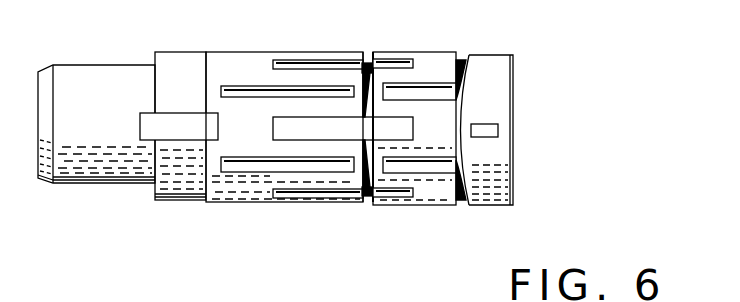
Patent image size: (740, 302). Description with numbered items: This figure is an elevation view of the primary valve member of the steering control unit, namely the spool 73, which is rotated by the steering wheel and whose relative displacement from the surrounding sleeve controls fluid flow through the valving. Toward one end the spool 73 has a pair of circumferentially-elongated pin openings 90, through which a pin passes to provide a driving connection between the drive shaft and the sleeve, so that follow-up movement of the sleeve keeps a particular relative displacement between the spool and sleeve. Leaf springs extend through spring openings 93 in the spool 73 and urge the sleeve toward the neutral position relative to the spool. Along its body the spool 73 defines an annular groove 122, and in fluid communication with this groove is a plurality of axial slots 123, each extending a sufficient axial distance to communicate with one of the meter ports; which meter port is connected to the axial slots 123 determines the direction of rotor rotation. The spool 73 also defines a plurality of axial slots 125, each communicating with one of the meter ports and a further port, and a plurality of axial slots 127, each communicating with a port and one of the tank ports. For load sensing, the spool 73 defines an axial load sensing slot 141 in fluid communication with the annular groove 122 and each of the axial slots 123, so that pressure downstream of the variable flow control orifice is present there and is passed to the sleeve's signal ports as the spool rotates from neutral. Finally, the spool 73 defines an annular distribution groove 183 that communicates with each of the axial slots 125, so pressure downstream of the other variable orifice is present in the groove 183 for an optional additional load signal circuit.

The spool 73 is at (122, 40).
The pin openings 90 is at (229, 52).
The spring openings 93 is at (190, 118).
The annular groove 122 is at (462, 102).
The axial slots 123 is at (436, 87).
The axial slots 125 is at (322, 66).
The axial slots 127 is at (265, 92).
The load sensing slot 141 is at (483, 134).
The annular distribution groove 183 is at (368, 52).